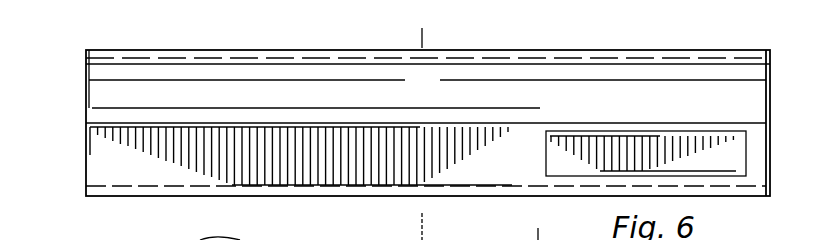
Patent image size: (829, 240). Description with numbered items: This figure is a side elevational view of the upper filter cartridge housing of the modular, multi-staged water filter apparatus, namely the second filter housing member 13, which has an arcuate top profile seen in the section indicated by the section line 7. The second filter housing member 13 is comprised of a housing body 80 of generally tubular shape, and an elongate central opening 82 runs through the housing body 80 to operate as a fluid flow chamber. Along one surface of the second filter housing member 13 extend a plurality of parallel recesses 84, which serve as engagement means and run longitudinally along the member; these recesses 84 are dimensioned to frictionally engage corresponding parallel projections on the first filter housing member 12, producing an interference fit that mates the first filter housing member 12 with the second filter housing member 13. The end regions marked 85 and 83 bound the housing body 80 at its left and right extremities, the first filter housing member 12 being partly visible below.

The second filter housing member 13 is at (248, 51).
The housing body 80 is at (636, 51).
The elongate central opening 82 is at (437, 101).
The right end wall 83 is at (786, 78).
The left end wall 85 is at (84, 88).
The plurality of parallel recesses 84 is at (285, 197).
The section line 7- 7 is at (396, 37).
The first filter housing member 12 is at (147, 239).